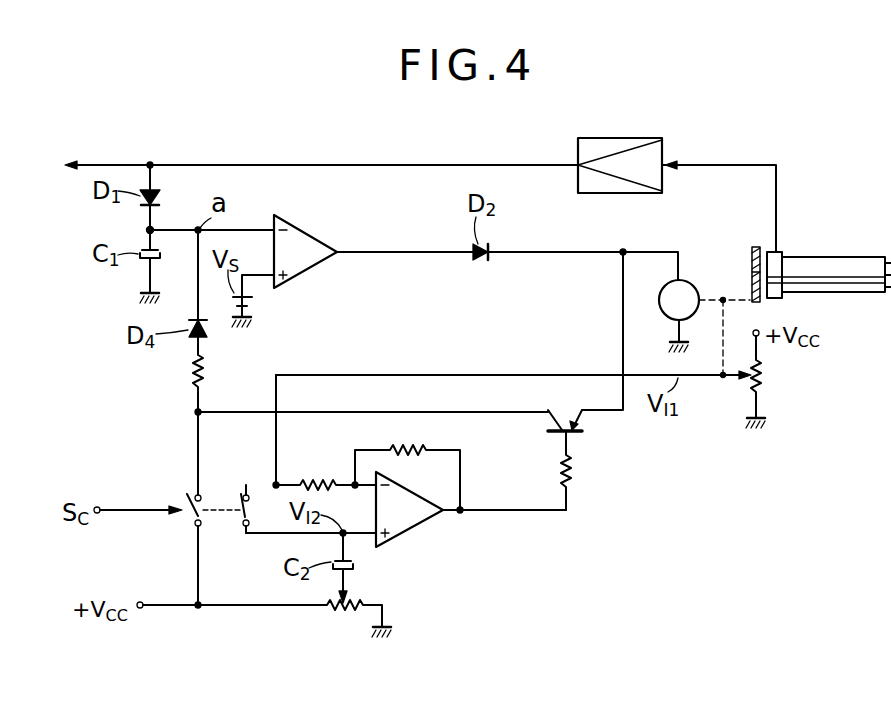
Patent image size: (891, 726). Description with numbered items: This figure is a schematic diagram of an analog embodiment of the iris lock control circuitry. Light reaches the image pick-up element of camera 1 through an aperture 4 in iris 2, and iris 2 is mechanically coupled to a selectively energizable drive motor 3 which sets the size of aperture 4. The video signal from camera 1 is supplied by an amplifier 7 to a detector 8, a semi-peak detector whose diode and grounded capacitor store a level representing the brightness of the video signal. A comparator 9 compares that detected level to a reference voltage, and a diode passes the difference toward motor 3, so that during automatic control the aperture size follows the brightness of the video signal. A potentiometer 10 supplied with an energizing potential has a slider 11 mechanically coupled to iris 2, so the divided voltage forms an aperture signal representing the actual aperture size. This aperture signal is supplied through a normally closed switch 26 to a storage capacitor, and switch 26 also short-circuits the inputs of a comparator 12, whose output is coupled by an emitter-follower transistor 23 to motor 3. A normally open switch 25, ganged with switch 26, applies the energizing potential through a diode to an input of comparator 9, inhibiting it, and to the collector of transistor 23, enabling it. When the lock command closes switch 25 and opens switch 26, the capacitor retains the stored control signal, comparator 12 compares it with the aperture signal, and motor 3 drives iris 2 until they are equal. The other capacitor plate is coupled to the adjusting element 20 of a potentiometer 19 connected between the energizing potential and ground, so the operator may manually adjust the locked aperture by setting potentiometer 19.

The camera 1 is at (830, 256).
The iris 2 is at (754, 246).
The drive motor 3 is at (687, 283).
The aperture 4 is at (750, 272).
The amplifier 7 is at (664, 150).
The detector 8 is at (153, 229).
The comparator 9 is at (305, 226).
The potentiometer 10 is at (766, 381).
The slider 11 is at (732, 381).
The comparator 12 is at (420, 525).
The potentiometer 19 is at (345, 612).
The adjusting element 20 is at (349, 580).
The emitter-follower transistor 23 is at (589, 440).
The switch 25 is at (188, 524).
The switch 26 is at (236, 524).